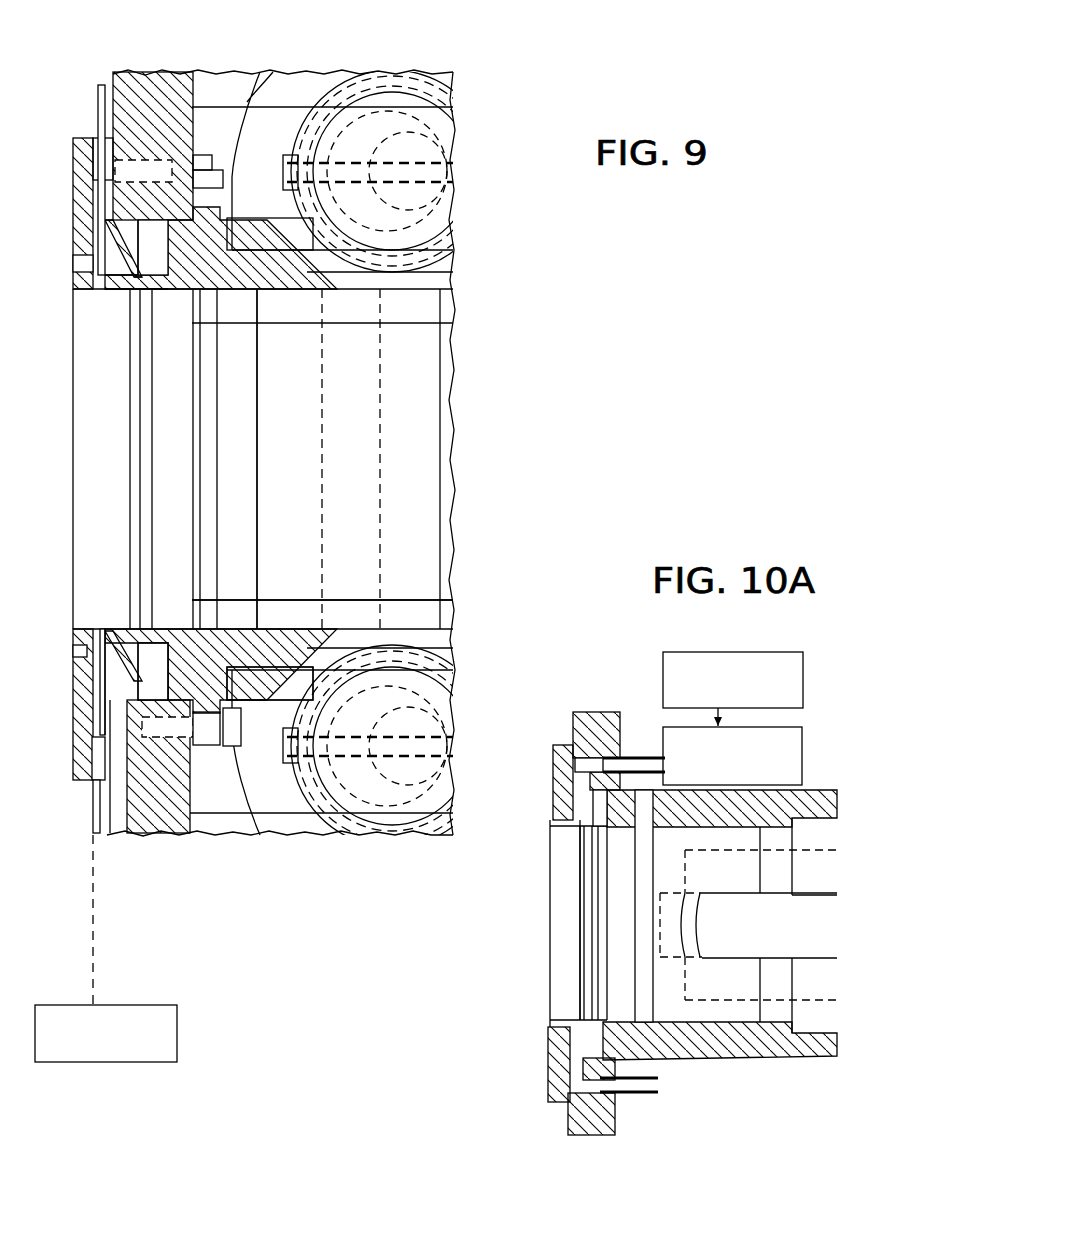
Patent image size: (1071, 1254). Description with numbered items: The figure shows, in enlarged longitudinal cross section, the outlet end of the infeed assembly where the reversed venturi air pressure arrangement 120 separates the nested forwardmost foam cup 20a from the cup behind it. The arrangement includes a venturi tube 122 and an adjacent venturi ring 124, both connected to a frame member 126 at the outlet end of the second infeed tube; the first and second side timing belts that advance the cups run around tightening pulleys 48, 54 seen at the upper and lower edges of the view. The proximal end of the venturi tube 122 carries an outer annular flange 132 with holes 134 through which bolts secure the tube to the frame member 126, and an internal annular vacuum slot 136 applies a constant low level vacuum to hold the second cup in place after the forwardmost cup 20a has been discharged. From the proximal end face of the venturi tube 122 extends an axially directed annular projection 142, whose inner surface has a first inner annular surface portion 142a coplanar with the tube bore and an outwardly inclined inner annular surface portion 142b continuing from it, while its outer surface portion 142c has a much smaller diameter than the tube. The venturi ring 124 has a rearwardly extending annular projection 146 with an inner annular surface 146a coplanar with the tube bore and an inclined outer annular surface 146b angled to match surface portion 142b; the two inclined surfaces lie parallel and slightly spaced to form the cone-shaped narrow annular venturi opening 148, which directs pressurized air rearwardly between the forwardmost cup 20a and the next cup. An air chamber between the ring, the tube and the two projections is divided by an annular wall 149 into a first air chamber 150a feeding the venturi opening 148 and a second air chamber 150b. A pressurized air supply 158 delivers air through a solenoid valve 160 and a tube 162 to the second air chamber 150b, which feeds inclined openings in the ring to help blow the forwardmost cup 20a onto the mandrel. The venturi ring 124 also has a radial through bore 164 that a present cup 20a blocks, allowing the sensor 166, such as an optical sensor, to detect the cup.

In FIG. 9, the forwardmost foam cup 20a is at (256, 471).
In FIG. 9, the tightening pulley 48 is at (340, 82).
In FIG. 9, the tightening pulley 54 is at (321, 817).
In FIG. 9, the reversed venturi air pressure arrangement 120 is at (262, 590).
In FIG. 9, the venturi tube 122 is at (320, 627).
In FIG. 10A, the venturi tube 122 is at (676, 1053).
In FIG. 9, the venturi ring 124 is at (74, 792).
In FIG. 10A, the venturi ring 124 is at (548, 1071).
In FIG. 9, the frame member 126 is at (151, 82).
In FIG. 9, the outer annular flange 132 is at (236, 706).
In FIG. 9, the holes 134 is at (222, 748).
In FIG. 9, the internal annular vacuum slot 136 is at (245, 636).
In FIG. 9, the annular projection 142 is at (162, 626).
In FIG. 9, the first inner annular surface portion 142a is at (160, 293).
In FIG. 9, the outwardly inclined inner annular surface portion 142b is at (150, 293).
In FIG. 9, the outer surface portion 142c is at (148, 285).
In FIG. 9, the annular projection 146 is at (126, 620).
In FIG. 9, the inner annular surface 146a is at (128, 291).
In FIG. 9, the inclined outer annular surface 146b is at (130, 291).
In FIG. 9, the narrow annular venturi opening 148 is at (145, 632).
In FIG. 9, the annular wall 149 is at (145, 833).
In FIG. 9, the first air chamber 150a is at (152, 665).
In FIG. 10A, the first air chamber 150a is at (598, 812).
In FIG. 9, the second air chamber 150b is at (115, 655).
In FIG. 10A, the second air chamber 150b is at (580, 798).
In FIG. 10A, the pressurized air supply 158 is at (803, 683).
In FIG. 10A, the solenoid valve 160 is at (802, 757).
In FIG. 10A, the tube 162 is at (638, 753).
In FIG. 9, the radial through bore 164 is at (92, 757).
In FIG. 9, the sensor 166 is at (178, 1046).